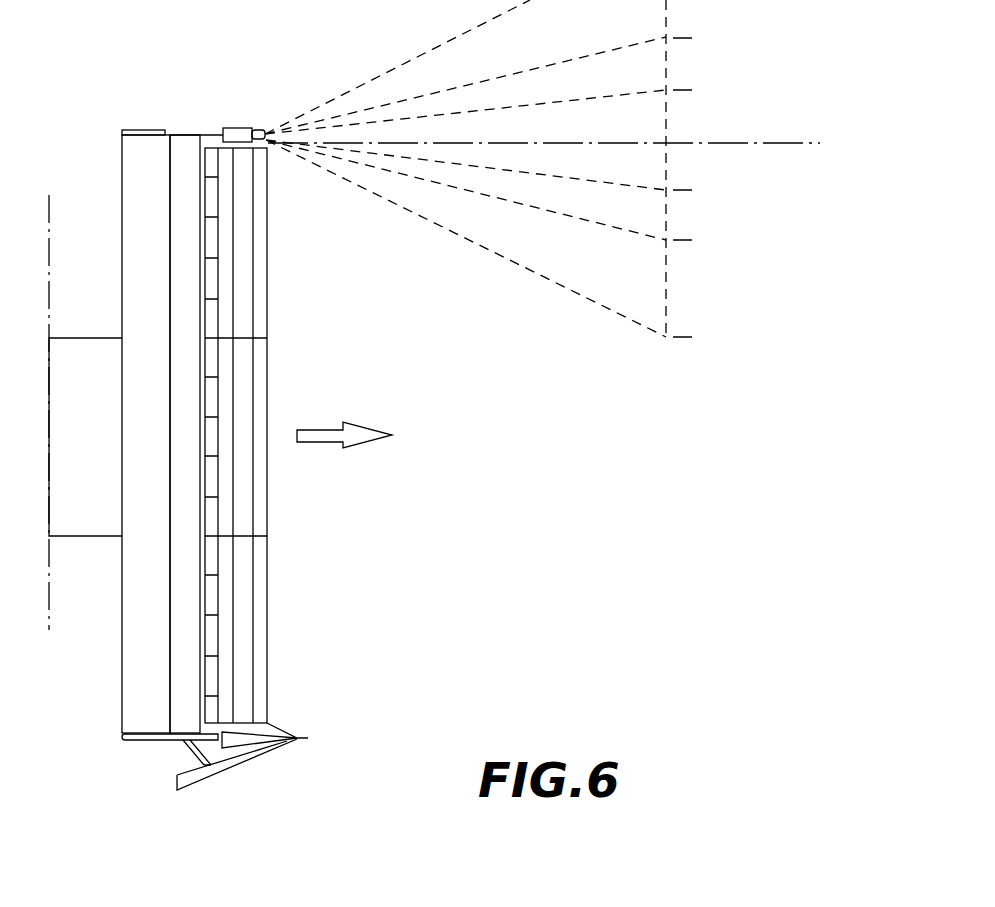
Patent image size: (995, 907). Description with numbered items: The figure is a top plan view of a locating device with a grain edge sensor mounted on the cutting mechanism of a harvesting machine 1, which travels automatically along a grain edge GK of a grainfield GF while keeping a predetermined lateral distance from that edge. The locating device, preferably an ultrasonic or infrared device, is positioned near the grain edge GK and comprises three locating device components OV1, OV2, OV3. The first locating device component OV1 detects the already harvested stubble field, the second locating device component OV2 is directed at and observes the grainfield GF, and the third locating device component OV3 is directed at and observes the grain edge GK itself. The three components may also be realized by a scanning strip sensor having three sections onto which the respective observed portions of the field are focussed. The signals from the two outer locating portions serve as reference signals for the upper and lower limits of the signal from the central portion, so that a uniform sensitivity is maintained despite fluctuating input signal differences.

The harvesting machine 1 is at (130, 568).
The first locating device component OV1 is at (263, 127).
The second locating device component OV2 is at (270, 146).
The third locating device component OV3 is at (268, 128).
The grain edge GK is at (777, 143).
The grainfield GF is at (443, 365).